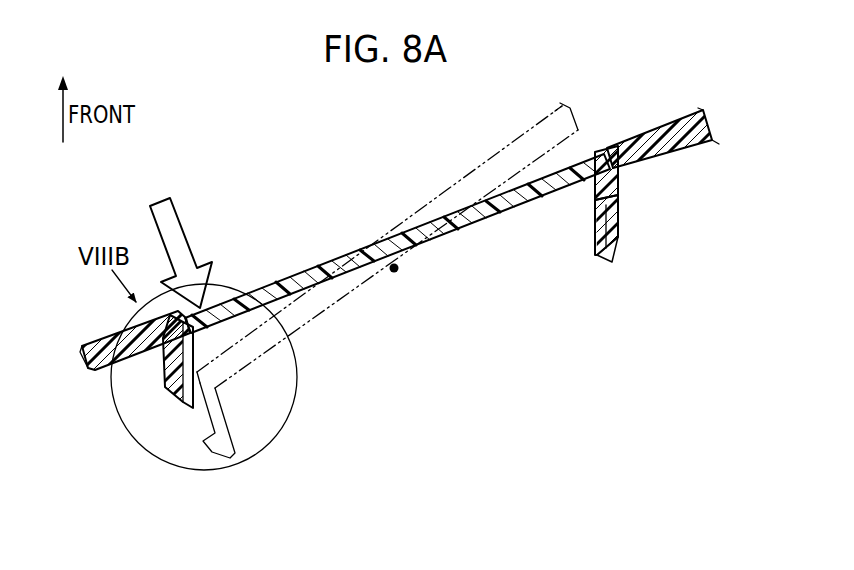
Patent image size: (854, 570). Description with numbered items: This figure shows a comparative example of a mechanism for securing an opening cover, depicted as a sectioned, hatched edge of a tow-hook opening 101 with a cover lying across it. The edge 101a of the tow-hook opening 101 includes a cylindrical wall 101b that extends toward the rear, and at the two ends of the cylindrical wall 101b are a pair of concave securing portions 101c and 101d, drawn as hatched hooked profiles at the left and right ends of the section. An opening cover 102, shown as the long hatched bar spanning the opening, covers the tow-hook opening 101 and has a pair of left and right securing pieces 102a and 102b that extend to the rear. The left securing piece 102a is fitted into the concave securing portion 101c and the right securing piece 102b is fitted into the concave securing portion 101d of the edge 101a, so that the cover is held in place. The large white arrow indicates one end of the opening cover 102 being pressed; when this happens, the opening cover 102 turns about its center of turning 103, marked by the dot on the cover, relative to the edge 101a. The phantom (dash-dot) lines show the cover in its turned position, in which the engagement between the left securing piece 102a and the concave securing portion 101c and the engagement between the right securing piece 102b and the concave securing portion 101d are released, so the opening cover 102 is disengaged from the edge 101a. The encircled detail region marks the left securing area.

The tow-hook opening 101 is at (606, 148).
The edge 101a is at (627, 186).
The cylindrical wall 101b is at (158, 369).
The concave securing portion 101c is at (184, 386).
The concave securing portion 101d is at (616, 232).
The opening cover 102 is at (461, 184).
The left securing piece 102a is at (232, 440).
The right securing piece 102b is at (601, 258).
The center of turning 103 is at (396, 274).